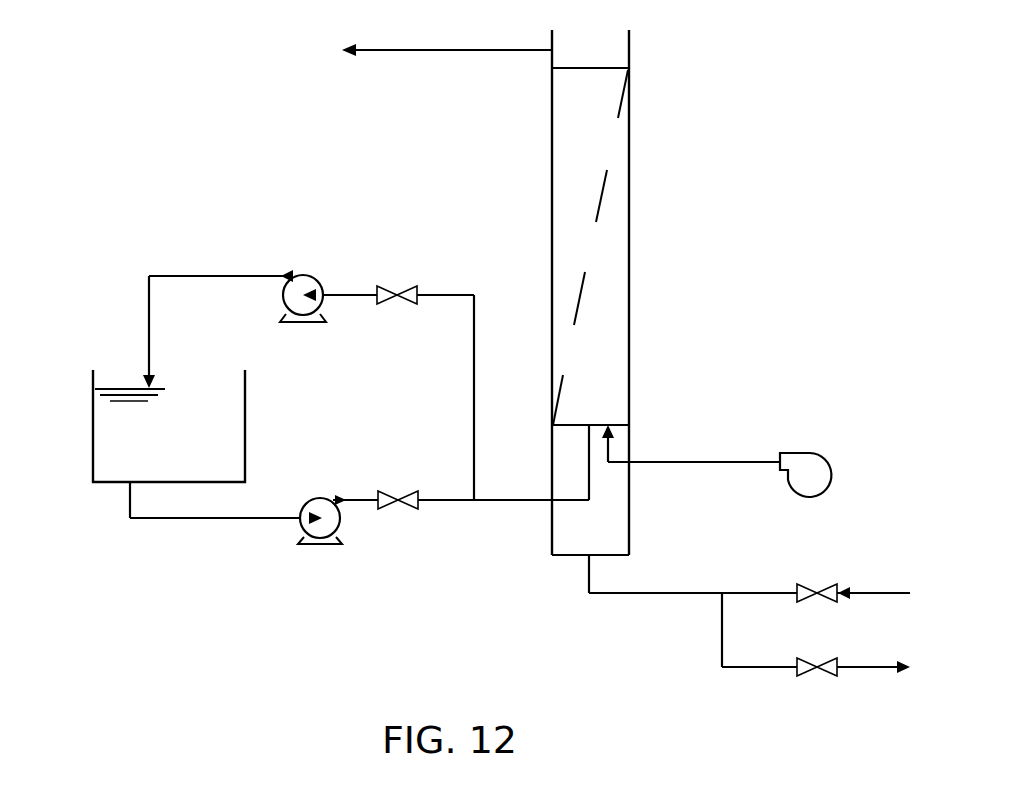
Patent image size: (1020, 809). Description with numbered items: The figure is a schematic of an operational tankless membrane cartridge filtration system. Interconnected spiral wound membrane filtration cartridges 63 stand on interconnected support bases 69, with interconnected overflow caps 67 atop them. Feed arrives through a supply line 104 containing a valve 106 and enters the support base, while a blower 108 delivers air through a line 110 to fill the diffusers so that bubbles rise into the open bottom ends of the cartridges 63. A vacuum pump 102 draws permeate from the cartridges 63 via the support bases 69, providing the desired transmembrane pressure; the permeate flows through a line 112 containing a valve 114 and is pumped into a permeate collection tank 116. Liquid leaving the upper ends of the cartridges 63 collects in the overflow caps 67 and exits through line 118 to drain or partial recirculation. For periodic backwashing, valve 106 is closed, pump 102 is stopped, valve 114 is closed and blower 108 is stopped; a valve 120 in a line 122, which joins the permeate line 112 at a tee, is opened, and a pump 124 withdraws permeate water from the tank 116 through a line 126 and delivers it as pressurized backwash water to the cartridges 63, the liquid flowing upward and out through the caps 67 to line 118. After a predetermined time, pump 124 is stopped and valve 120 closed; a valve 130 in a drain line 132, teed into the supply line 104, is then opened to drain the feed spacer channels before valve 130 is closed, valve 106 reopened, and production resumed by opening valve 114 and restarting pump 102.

The spiral wound membrane filtration cartridge 63 is at (629, 218).
The overflow cap 67 is at (629, 61).
The support base 69 is at (629, 500).
The vacuum pump 102 is at (301, 316).
The supply line 104 is at (675, 593).
The valve 106 is at (817, 590).
The blower 108 is at (836, 477).
The line 110 is at (743, 462).
The permeate line 112 is at (475, 397).
The valve 114 is at (397, 291).
The permeate collection tank 116 is at (93, 445).
The line 118 is at (448, 50).
The valve 120 is at (398, 496).
The line 122 is at (442, 500).
The pump 124 is at (310, 541).
The line 126 is at (168, 518).
The valve 130 is at (817, 664).
The drain line 132 is at (866, 667).